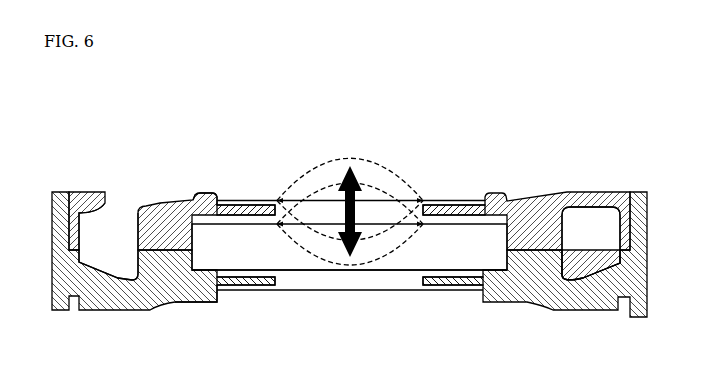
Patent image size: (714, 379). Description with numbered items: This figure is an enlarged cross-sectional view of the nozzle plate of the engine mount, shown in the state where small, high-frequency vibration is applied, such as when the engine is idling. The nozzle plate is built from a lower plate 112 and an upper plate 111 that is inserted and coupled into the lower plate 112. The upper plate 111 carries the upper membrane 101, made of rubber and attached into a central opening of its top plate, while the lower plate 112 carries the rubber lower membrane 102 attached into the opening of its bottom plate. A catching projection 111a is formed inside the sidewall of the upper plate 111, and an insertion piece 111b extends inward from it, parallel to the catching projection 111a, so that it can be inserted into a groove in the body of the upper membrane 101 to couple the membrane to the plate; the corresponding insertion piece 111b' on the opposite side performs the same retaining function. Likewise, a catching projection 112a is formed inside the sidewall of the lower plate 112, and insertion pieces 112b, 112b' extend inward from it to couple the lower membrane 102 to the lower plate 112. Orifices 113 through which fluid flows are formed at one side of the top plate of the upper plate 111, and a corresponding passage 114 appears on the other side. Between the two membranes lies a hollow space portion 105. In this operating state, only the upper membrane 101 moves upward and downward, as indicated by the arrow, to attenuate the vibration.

The upper membrane 101 is at (332, 208).
The lower membrane 102 is at (352, 278).
The hollow space portion 105 is at (462, 256).
The upper plate 111 is at (158, 220).
The catching projection 111a is at (207, 198).
The insertion piece 111b is at (247, 172).
The flange of upper housing (opposite side) 111b' is at (454, 171).
The lower plate 112 is at (147, 295).
The catching projection 112a is at (208, 295).
The insertion piece 112b is at (248, 320).
The flange of lower housing (opposite side) 112b' is at (455, 320).
The orifices 113 is at (104, 232).
The cavity 114 is at (594, 235).